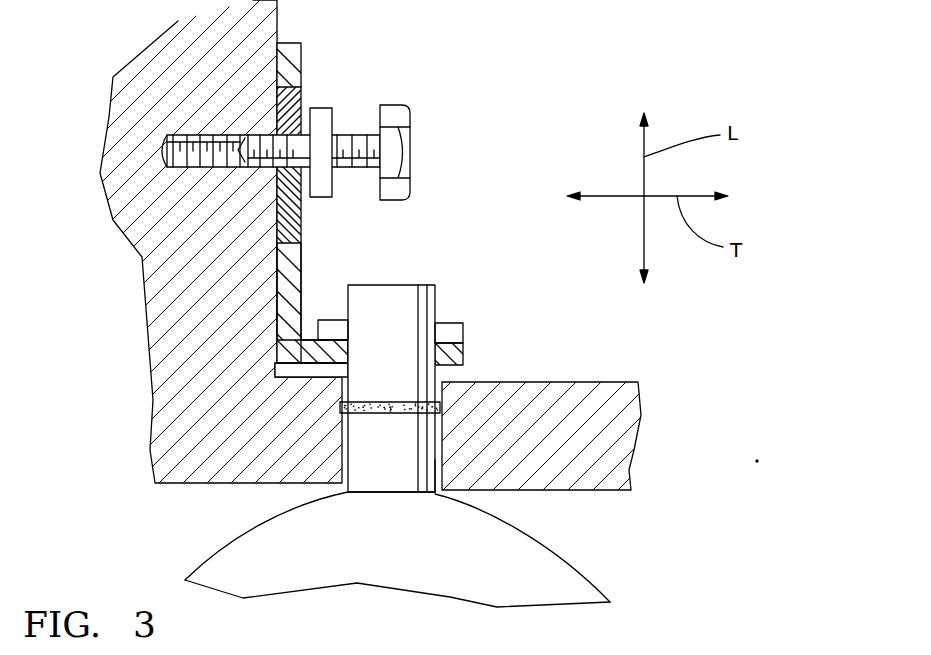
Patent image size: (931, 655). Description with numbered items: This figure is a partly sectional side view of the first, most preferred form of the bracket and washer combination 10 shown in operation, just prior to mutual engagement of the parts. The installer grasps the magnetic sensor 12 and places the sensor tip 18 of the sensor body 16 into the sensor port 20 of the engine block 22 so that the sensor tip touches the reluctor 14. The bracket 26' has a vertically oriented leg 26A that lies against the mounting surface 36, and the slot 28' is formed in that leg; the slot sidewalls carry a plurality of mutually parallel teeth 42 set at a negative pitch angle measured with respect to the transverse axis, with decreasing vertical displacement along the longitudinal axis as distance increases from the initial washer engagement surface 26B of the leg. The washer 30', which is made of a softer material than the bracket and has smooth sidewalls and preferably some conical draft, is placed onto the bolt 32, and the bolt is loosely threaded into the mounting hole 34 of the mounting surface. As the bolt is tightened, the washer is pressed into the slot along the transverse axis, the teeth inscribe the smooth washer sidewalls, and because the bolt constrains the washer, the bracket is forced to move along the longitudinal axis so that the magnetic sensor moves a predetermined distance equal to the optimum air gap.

The bracket and washer combination 10 is at (350, 204).
The magnetic sensor 12 is at (445, 298).
The reluctor 14 is at (578, 567).
The sensor body 16 is at (438, 470).
The sensor tip 18 is at (385, 494).
The sensor port 20 is at (440, 452).
The engine block 22 is at (590, 382).
The bracket 26' is at (314, 250).
The vertically oriented leg 26A is at (292, 268).
The initial washer engagement surface 26B is at (292, 232).
The slot 28' is at (249, 150).
The washer 30' is at (363, 133).
The bolt 32 is at (410, 107).
The mounting hole 34 is at (160, 149).
The mounting surface 36 is at (277, 23).
The teeth 42 is at (290, 215).